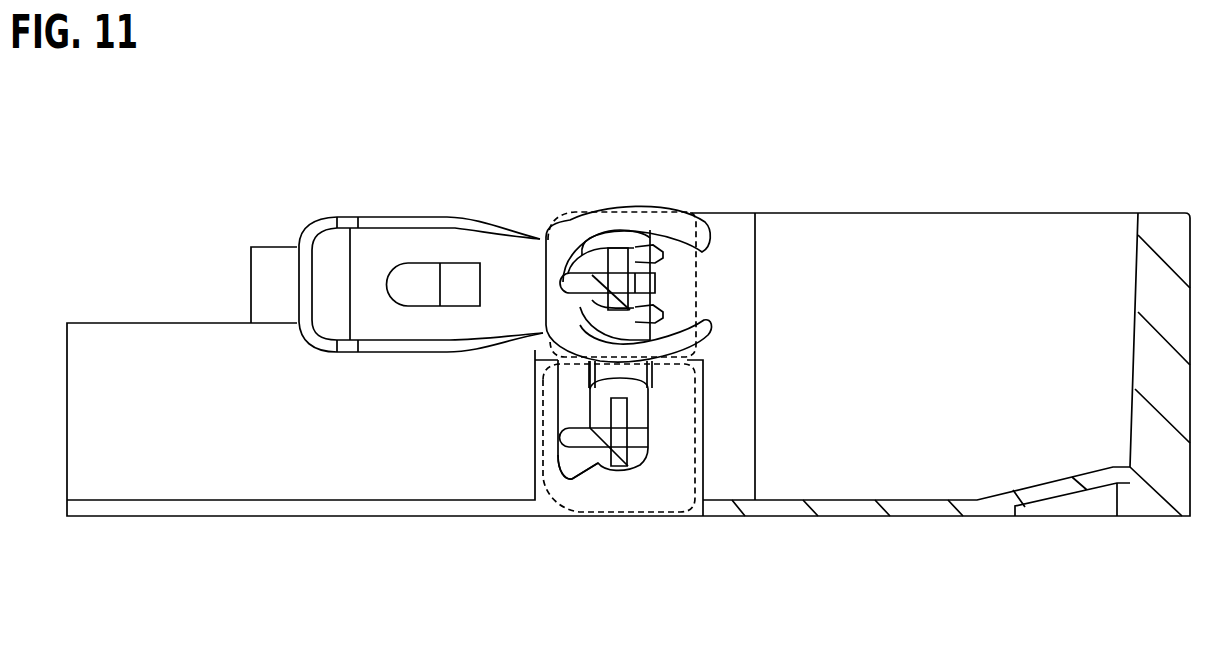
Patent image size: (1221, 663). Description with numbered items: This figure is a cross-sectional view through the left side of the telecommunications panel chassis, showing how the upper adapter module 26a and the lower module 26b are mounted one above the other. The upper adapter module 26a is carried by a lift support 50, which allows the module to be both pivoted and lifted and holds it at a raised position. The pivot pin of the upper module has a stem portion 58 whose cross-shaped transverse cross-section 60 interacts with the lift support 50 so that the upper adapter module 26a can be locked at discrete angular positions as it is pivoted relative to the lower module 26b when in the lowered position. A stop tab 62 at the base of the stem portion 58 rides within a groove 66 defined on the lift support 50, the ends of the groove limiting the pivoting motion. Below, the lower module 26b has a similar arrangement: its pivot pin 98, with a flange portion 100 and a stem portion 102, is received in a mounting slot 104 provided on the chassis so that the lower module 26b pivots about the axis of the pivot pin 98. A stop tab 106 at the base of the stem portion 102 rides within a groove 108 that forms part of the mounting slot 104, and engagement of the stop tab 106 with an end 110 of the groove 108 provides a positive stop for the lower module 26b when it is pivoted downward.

The lift support 50 is at (397, 218).
The upper adapter module 26a is at (667, 222).
The lower module 26b is at (670, 497).
The stem portion 58 is at (620, 283).
The cross-shaped transverse cross-section 60 is at (646, 273).
The stop tab 62 is at (570, 283).
The groove 66 is at (580, 263).
The pivot pin 98 is at (622, 437).
The flange portion 100 is at (643, 413).
The stem portion 102 is at (623, 423).
The mounting slot 104 is at (643, 402).
The stop tab 106 is at (572, 440).
The groove 108 is at (570, 409).
The end of the groove 110 is at (583, 472).